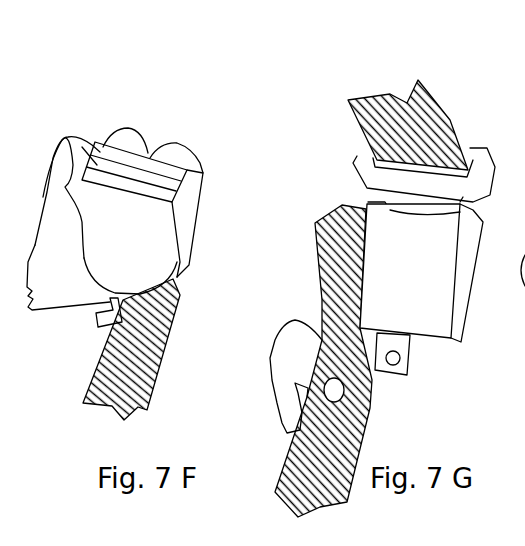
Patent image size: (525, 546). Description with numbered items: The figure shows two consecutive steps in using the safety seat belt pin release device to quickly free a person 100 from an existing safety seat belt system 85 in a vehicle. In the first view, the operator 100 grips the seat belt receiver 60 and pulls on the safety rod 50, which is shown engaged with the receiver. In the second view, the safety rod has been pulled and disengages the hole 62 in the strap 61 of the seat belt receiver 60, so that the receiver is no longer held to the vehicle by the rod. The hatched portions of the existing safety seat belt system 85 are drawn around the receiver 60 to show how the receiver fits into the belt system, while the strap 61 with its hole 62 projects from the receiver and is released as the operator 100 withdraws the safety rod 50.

In FIG. 7F, the person 100 is at (46, 235).
In FIG. 7G, the person 100 is at (292, 363).
In FIG. 7F, the seat belt receiver 60 is at (198, 144).
In FIG. 7G, the seat belt receiver 60 is at (415, 281).
In FIG. 7F, the safety rod 50 is at (110, 310).
In FIG. 7G, the safety seat belt system 85 is at (427, 133).
In FIG. 7G, the strap 61 is at (392, 378).
In FIG. 7G, the hole 62 is at (403, 361).